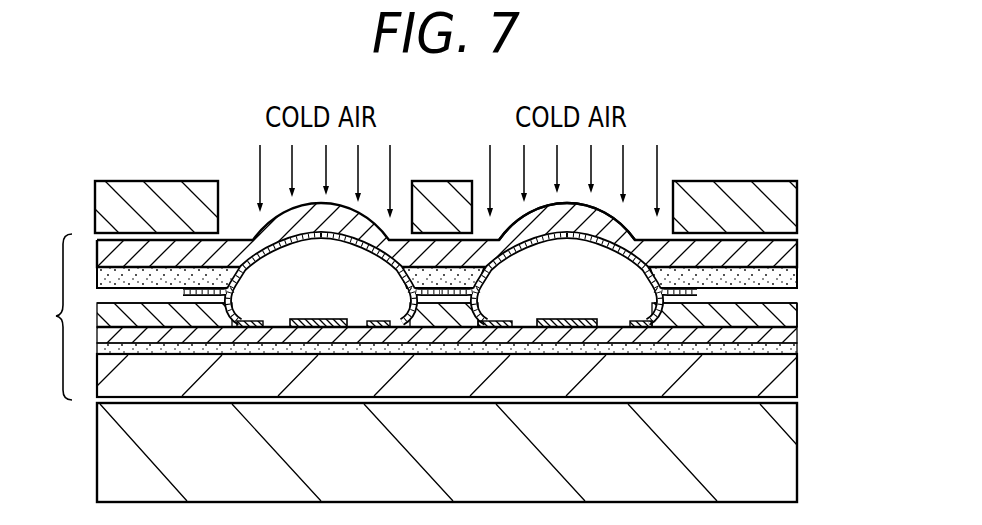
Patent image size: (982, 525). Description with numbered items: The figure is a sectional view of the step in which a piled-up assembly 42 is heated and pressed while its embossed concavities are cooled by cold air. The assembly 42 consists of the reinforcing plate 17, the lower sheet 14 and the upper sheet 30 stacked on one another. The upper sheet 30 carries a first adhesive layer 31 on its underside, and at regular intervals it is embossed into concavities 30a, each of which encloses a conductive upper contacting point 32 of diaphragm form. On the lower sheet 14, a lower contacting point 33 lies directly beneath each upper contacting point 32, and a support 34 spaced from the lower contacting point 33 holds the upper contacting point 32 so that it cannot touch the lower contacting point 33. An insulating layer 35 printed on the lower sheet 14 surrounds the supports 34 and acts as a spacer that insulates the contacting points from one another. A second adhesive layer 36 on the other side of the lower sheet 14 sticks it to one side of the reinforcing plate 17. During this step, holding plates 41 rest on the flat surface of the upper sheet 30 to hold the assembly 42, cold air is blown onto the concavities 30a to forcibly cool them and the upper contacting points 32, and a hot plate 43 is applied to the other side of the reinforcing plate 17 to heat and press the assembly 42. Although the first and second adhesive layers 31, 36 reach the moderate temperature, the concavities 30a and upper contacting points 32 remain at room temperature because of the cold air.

The holding plate 41 is at (790, 215).
The upper sheet 30 is at (787, 251).
The concavity 30a is at (627, 237).
The first adhesive layer 31 is at (790, 278).
The insulating layer 35 is at (790, 317).
The lower sheet 14 is at (782, 335).
The second adhesive layer 36 is at (790, 350).
The reinforcing plate 17 is at (790, 385).
The hot plate 43 is at (783, 440).
The assembly 42 is at (46, 317).
The lower contacting point 33 is at (307, 319).
The upper contacting point 32 is at (342, 241).
The support 34 is at (634, 320).